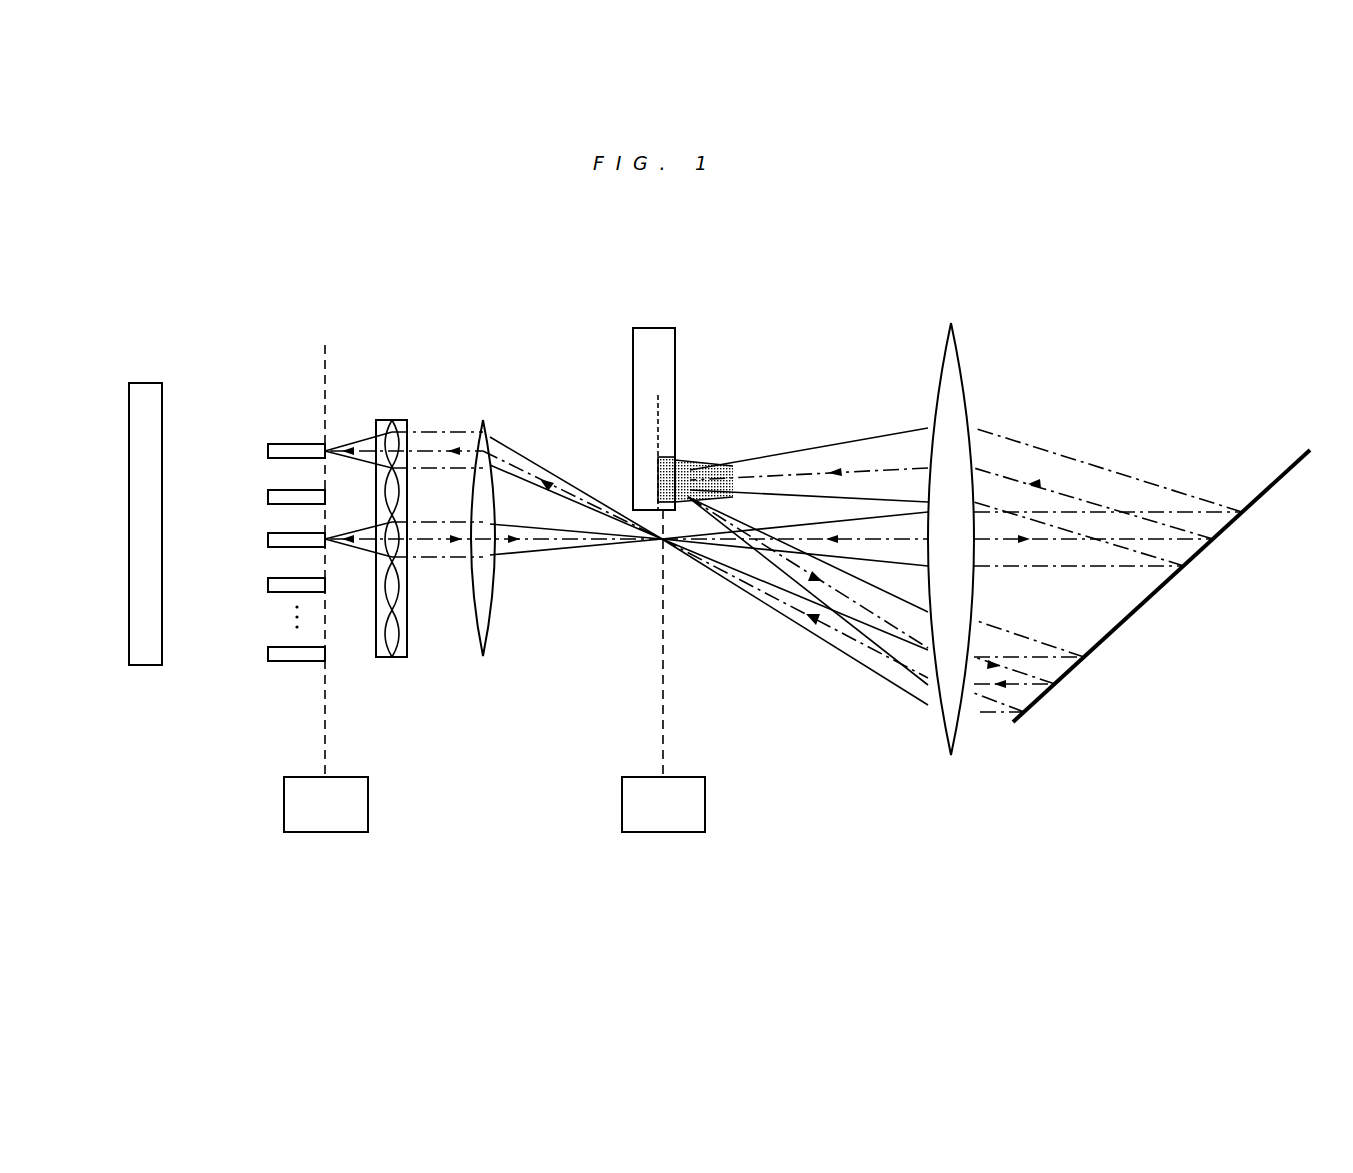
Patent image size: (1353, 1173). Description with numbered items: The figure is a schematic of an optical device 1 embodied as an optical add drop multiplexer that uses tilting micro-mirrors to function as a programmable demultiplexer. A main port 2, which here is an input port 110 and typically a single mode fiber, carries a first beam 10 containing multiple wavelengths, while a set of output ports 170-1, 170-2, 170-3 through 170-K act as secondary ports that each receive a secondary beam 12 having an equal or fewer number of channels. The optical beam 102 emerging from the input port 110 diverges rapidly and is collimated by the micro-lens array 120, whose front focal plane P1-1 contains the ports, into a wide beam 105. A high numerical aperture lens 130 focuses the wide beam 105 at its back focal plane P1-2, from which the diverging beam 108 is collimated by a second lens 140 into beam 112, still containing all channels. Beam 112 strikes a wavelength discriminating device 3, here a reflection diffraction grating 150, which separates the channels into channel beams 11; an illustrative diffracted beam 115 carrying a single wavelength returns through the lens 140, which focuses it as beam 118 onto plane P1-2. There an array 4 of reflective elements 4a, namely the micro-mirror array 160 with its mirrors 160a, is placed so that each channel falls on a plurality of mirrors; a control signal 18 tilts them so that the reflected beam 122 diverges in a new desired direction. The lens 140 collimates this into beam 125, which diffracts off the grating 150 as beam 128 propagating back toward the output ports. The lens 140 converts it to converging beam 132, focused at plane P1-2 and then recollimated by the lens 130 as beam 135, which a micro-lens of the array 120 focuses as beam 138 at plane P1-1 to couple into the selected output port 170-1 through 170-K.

The optical device 1 is at (827, 272).
The port 2 is at (257, 543).
The wavelength discriminating device 3 is at (1161, 578).
The array of reflective elements 4 is at (698, 419).
The reflective element 4a is at (631, 451).
The first beam 10 is at (420, 520).
The channel beam 11 is at (1108, 491).
The secondary beam 12 is at (417, 430).
The control signal 18 is at (652, 327).
The optical beam 102 is at (354, 530).
The wide beam 105 is at (456, 520).
The diverging beam 108 is at (560, 527).
The input port 110 is at (268, 540).
The collimated beam 112 is at (1053, 569).
The diffracted beam 115 is at (1050, 442).
The focused beam 118 is at (853, 440).
The micro-lens array 120 is at (392, 658).
The reflected beam 122 is at (757, 522).
The collimated beam 125 is at (1030, 633).
The beam 128 is at (977, 716).
The high numerical aperture lens 130 is at (483, 657).
The converging beam 132 is at (856, 660).
The recollimated beam 135 is at (462, 428).
The focused beam 138 is at (354, 440).
The second lens 140 is at (951, 323).
The reflection diffraction grating 150 is at (1286, 465).
The micro-mirror array 160 is at (676, 373).
The mirror 160a is at (658, 397).
The output port 170-1 is at (264, 435).
The output port 170-2 is at (247, 489).
The output port 170-3 is at (265, 591).
The output port 170-K is at (265, 661).